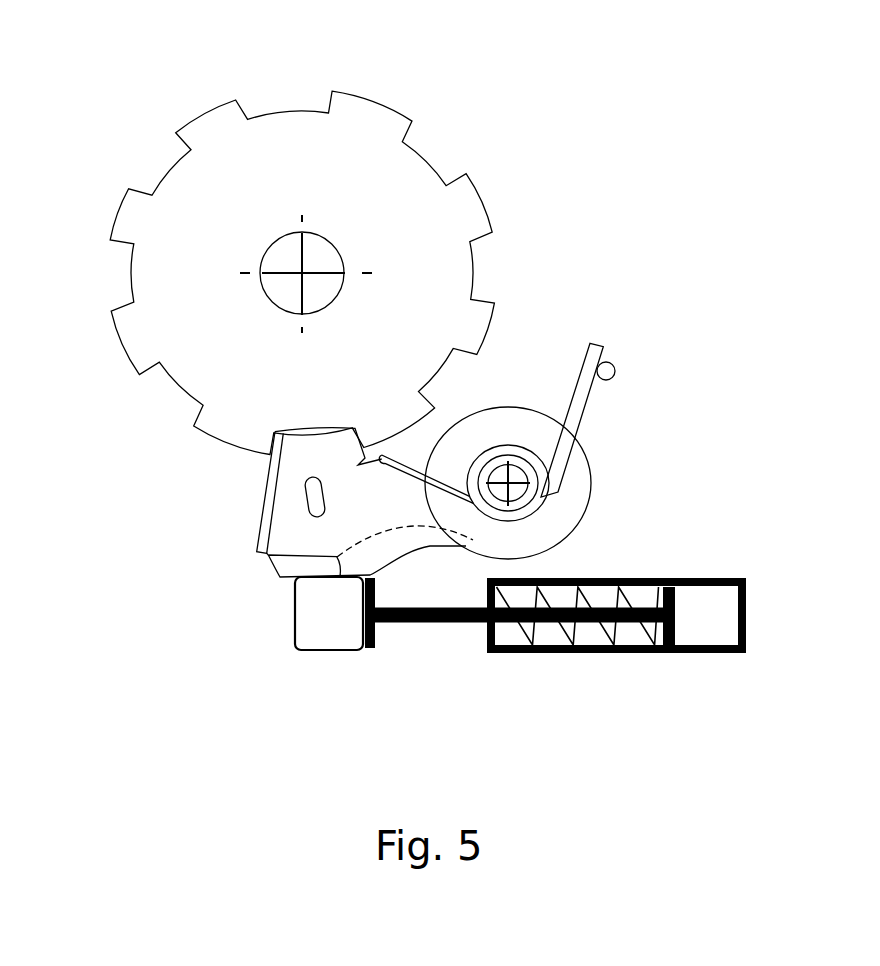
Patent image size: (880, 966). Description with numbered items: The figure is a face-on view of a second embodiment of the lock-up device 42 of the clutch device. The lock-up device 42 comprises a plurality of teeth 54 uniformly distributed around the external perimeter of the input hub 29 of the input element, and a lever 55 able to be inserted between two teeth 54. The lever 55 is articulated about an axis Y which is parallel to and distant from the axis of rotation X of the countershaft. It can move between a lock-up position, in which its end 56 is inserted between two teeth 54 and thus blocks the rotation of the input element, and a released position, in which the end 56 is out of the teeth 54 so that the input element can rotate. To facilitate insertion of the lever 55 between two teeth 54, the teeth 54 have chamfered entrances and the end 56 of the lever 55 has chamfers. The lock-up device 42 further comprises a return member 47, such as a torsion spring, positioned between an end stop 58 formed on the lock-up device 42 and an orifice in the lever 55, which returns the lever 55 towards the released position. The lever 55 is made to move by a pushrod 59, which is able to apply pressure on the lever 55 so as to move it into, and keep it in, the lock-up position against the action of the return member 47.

The lock-up device 42 is at (81, 123).
The input hub 29 is at (407, 115).
The teeth 54 is at (477, 202).
The axis of rotation X is at (302, 273).
The lever 55 is at (402, 508).
The end 56 is at (302, 445).
The pushrod 59 is at (321, 613).
The axis Y is at (508, 483).
The return member 47 is at (580, 412).
The end stop 58 is at (606, 380).